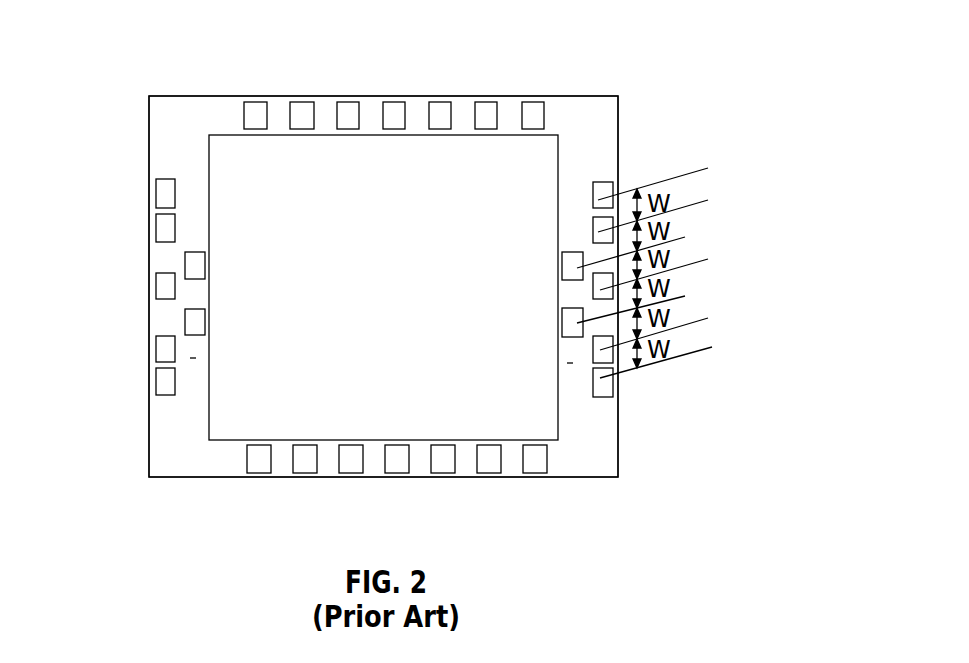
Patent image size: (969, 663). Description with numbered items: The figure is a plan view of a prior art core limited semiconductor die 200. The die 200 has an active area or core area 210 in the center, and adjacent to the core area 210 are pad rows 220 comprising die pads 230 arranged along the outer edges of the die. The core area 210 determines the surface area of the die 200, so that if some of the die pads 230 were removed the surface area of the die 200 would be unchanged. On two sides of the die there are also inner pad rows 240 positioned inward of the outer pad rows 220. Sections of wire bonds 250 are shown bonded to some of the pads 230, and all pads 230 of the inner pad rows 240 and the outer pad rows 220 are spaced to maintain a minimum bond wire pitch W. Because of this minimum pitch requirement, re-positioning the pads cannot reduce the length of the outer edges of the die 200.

The core limited semiconductor die 200 is at (593, 32).
The core area 210 is at (398, 280).
The pad rows 220 is at (303, 62).
The die pads 230 is at (302, 108).
The inner pad rows 240 is at (193, 358).
The wire bonds 250 is at (670, 180).